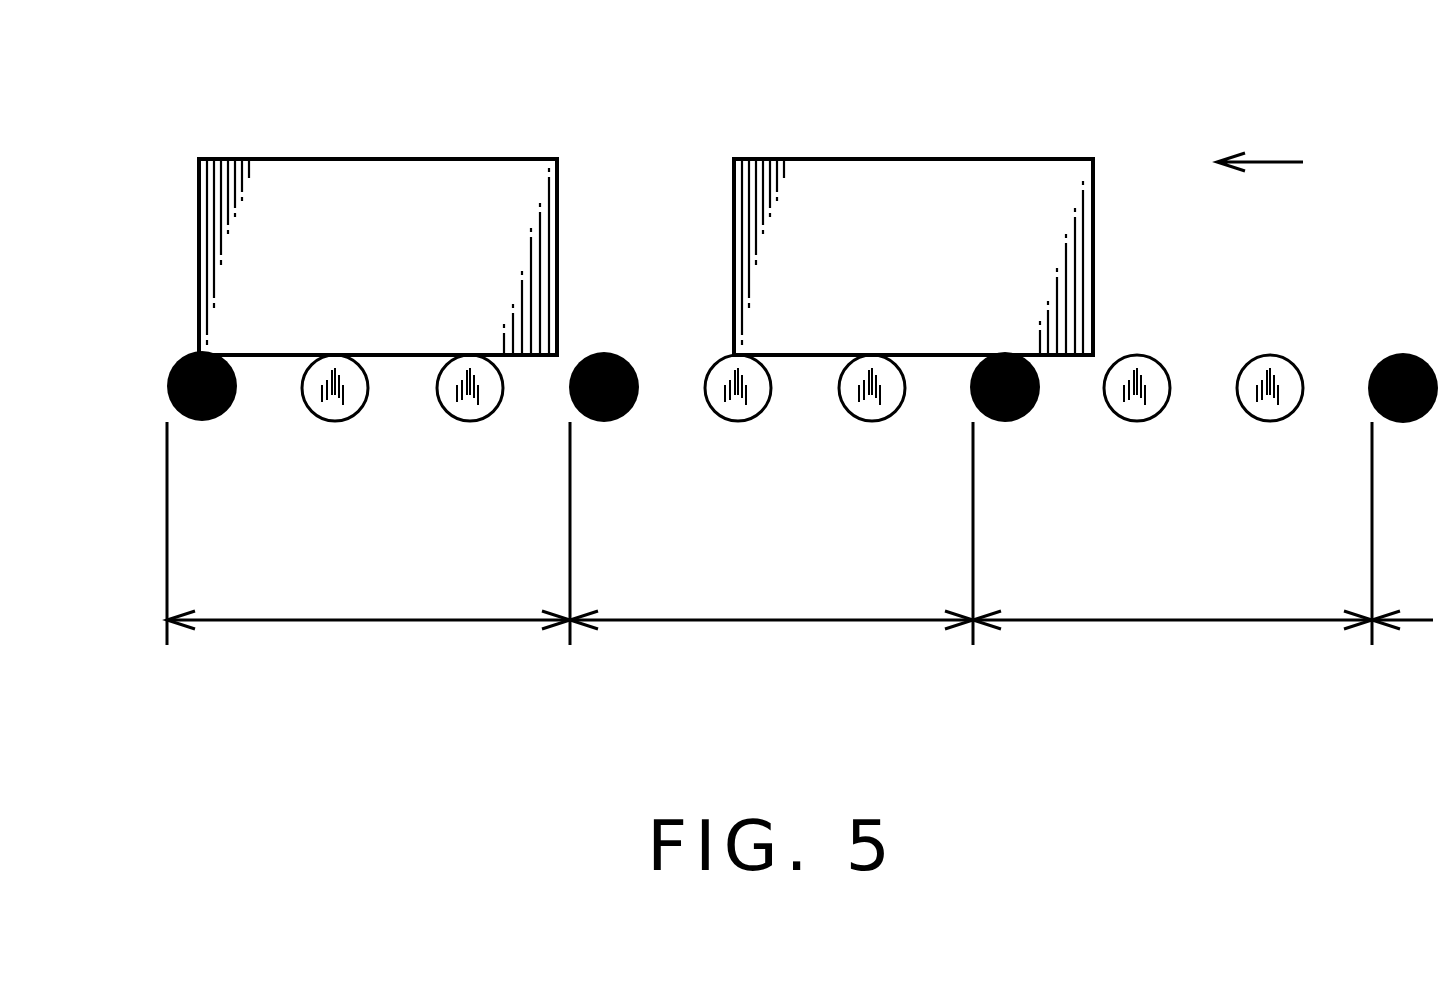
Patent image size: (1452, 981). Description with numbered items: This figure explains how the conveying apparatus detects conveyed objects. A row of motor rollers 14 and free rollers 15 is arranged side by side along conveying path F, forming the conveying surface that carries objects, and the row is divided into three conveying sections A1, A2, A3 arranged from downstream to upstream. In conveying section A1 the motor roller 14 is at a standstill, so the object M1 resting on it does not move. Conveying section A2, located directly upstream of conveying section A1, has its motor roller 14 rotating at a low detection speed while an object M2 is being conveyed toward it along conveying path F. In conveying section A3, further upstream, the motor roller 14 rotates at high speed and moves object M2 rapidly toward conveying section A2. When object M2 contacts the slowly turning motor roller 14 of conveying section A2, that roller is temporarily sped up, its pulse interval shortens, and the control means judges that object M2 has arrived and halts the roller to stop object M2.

The motor roller 14 is at (208, 420).
The free roller 15 is at (365, 398).
The object M1 is at (515, 158).
The object M2 is at (1035, 158).
The conveying path F is at (1260, 146).
The conveying section A1 is at (346, 571).
The conveying section A2 is at (759, 571).
The conveying section A3 is at (1163, 571).